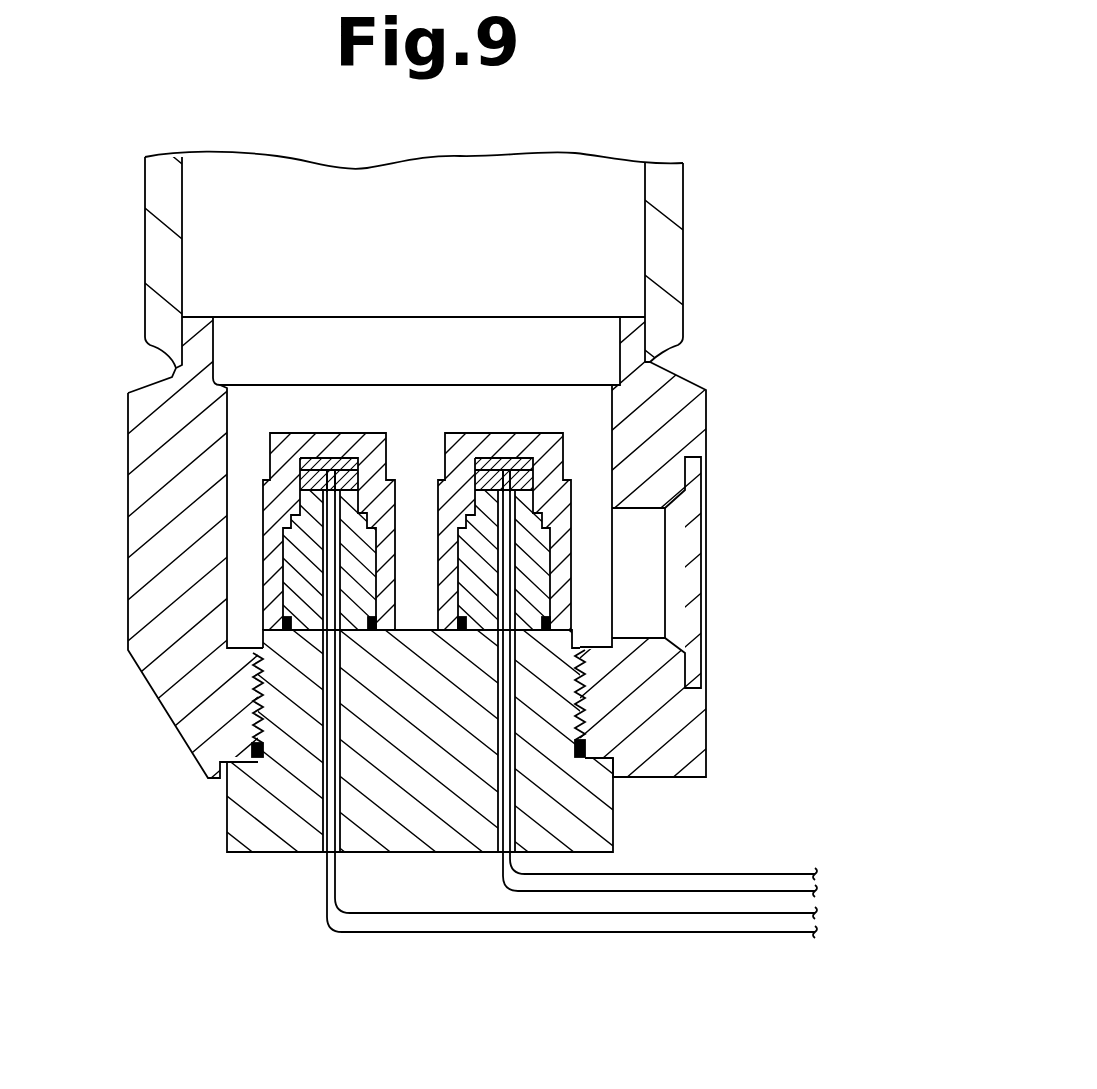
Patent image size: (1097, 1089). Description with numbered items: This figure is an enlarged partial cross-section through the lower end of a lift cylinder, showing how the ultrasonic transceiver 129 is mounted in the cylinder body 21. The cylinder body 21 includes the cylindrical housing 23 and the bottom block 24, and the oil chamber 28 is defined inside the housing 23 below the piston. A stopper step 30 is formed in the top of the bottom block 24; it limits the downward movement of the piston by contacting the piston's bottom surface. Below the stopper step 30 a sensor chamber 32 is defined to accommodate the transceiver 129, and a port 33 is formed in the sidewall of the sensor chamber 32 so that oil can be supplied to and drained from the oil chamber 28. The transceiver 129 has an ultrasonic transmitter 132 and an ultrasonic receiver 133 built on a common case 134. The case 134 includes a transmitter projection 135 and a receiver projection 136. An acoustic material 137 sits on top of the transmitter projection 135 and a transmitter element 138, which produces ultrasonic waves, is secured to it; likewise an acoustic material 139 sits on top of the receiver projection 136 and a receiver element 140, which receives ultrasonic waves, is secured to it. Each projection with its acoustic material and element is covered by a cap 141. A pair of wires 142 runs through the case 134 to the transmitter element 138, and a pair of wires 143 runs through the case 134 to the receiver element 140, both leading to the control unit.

The cylinder body 21 is at (683, 222).
The cylindrical housing 23 is at (682, 176).
The oil chamber 28 is at (605, 232).
The ultrasonic transceiver 129 is at (520, 258).
The stopper step 30 is at (217, 382).
The cap 141 is at (435, 445).
The bottom block 24 is at (142, 530).
The sensor chamber 32 is at (224, 410).
The port 33 is at (650, 512).
The case 134 is at (256, 848).
The transmitter projection 135 is at (297, 571).
The receiver projection 136 is at (543, 568).
The ultrasonic transmitter 132 is at (320, 387).
The ultrasonic receiver 133 is at (533, 392).
The acoustic material 137 is at (322, 467).
The transmitter element 138 is at (338, 463).
The acoustic material 139 is at (532, 470).
The receiver element 140 is at (500, 463).
The wires 142 is at (462, 932).
The wires 143 is at (762, 891).